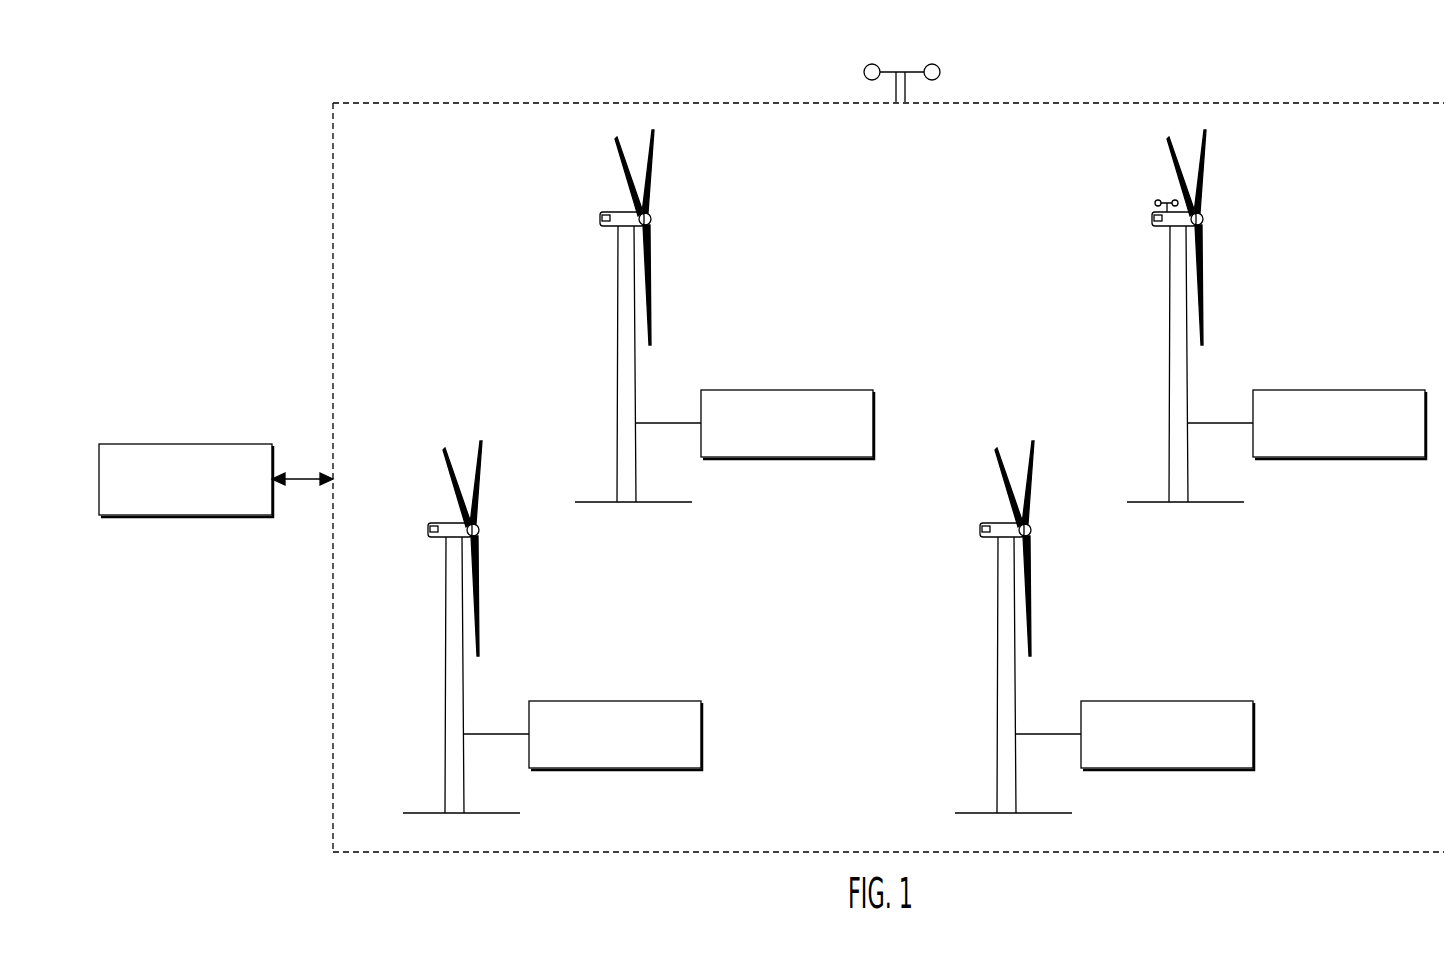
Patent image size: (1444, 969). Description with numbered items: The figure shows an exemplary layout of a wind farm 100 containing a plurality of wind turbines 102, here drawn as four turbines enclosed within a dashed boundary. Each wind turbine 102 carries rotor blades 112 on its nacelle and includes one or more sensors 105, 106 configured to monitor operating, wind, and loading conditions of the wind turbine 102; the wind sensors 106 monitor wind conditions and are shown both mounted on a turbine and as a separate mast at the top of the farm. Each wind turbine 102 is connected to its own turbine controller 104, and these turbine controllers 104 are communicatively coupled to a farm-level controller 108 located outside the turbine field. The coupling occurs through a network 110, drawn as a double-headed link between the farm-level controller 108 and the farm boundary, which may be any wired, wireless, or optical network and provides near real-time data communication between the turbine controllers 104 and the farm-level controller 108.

The wind farm 100 is at (219, 164).
The wind turbine 102 is at (600, 218).
The turbine controller 104 is at (808, 390).
The sensor 105 is at (608, 228).
The wind sensor 106 is at (863, 72).
The farm-level controller 108 is at (163, 444).
The network 110 is at (300, 477).
The rotor blade 112 is at (651, 256).